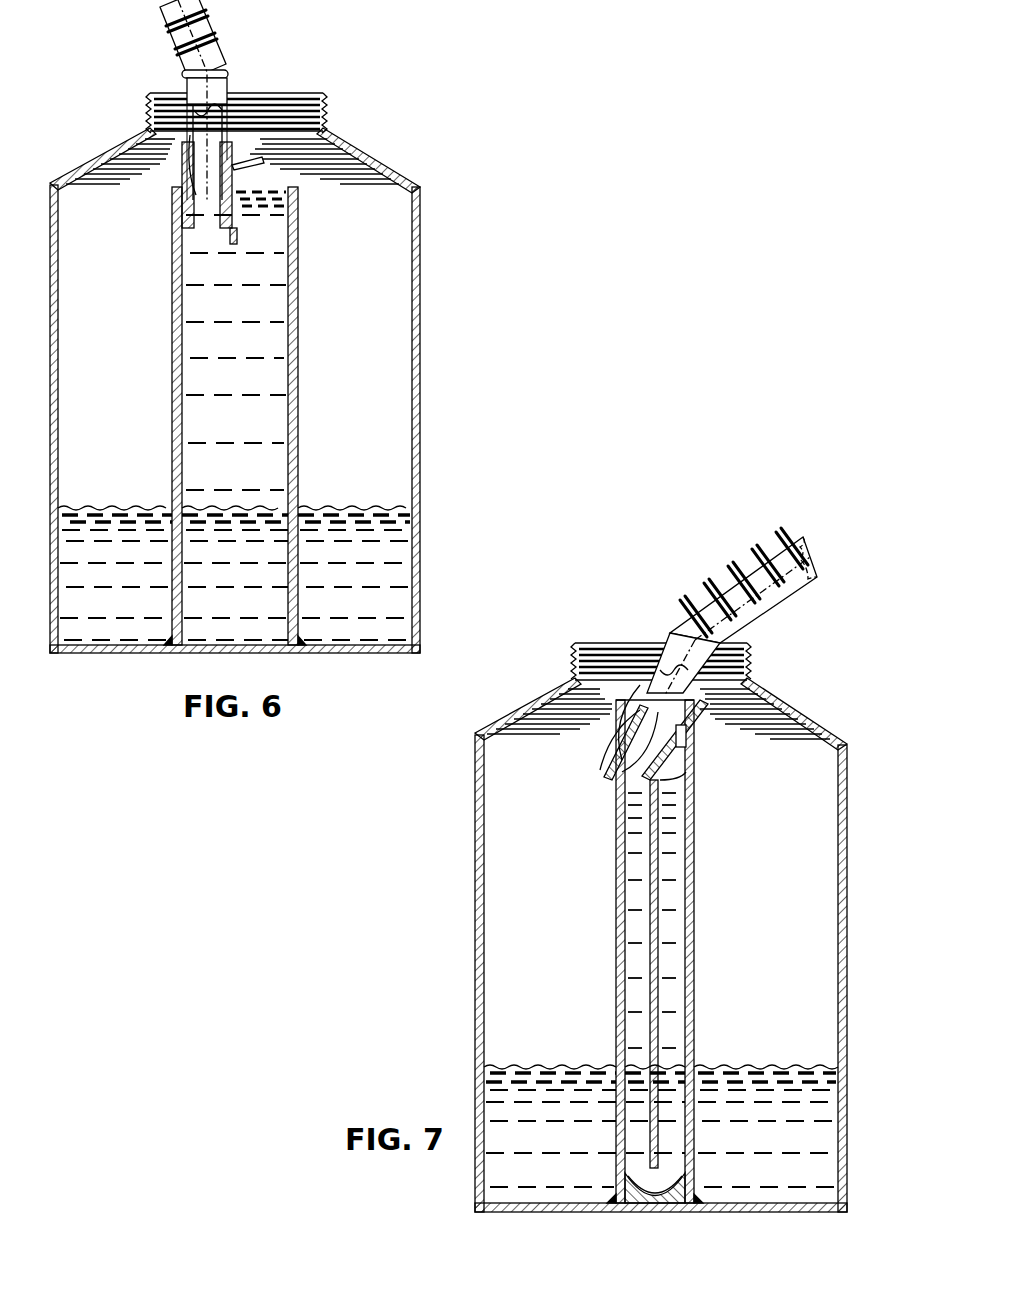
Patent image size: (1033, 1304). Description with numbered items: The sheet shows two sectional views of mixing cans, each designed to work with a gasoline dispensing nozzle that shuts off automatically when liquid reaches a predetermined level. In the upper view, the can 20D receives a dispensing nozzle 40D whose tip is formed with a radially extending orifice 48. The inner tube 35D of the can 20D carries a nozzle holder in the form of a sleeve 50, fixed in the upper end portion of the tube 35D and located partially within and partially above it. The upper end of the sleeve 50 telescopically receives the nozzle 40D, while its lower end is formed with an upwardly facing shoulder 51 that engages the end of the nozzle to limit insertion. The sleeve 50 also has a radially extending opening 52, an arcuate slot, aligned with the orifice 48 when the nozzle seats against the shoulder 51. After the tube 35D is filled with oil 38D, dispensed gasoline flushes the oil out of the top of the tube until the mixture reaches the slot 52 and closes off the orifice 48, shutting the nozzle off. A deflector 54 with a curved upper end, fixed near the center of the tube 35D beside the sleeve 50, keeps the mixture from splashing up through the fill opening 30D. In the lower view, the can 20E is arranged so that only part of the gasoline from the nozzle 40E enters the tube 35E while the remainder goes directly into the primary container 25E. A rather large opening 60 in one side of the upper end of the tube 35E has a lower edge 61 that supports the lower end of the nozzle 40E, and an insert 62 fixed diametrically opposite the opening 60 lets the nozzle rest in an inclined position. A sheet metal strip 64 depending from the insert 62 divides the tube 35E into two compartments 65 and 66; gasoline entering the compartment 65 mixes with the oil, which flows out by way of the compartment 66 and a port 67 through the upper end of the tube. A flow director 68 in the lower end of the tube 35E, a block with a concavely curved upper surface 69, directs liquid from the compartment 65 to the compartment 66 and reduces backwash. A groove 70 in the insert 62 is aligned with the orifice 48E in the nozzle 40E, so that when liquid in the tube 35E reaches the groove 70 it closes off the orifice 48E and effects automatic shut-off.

In FIG. 6, the can 20D is at (456, 272).
In FIG. 6, the fill opening 30D is at (300, 108).
In FIG. 6, the inner tube 35D is at (304, 408).
In FIG. 6, the oil 38D is at (234, 303).
In FIG. 6, the dispensing nozzle 40D is at (168, 16).
In FIG. 6, the orifice 48 is at (188, 122).
In FIG. 6, the sleeve 50 is at (237, 159).
In FIG. 6, the shoulder 51 is at (262, 160).
In FIG. 6, the opening 52 is at (184, 180).
In FIG. 6, the deflector 54 is at (242, 205).
In FIG. 7, the can 20E is at (861, 862).
In FIG. 7, the primary container 25E is at (852, 984).
In FIG. 7, the tube 35E is at (702, 915).
In FIG. 7, the nozzle 40E is at (720, 590).
In FIG. 7, the orifice 48E is at (628, 731).
In FIG. 7, the opening 60 is at (613, 743).
In FIG. 7, the lower edge 61 is at (631, 772).
In FIG. 7, the insert 62 is at (718, 646).
In FIG. 7, the sheet metal strip 64 is at (658, 958).
In FIG. 7, the compartment 65 is at (636, 1000).
In FIG. 7, the compartment 66 is at (668, 1031).
In FIG. 7, the port 67 is at (694, 775).
In FIG. 7, the flow director 68 is at (634, 1202).
In FIG. 7, the concavely curved upper surface 69 is at (660, 1196).
In FIG. 7, the groove 70 is at (669, 746).